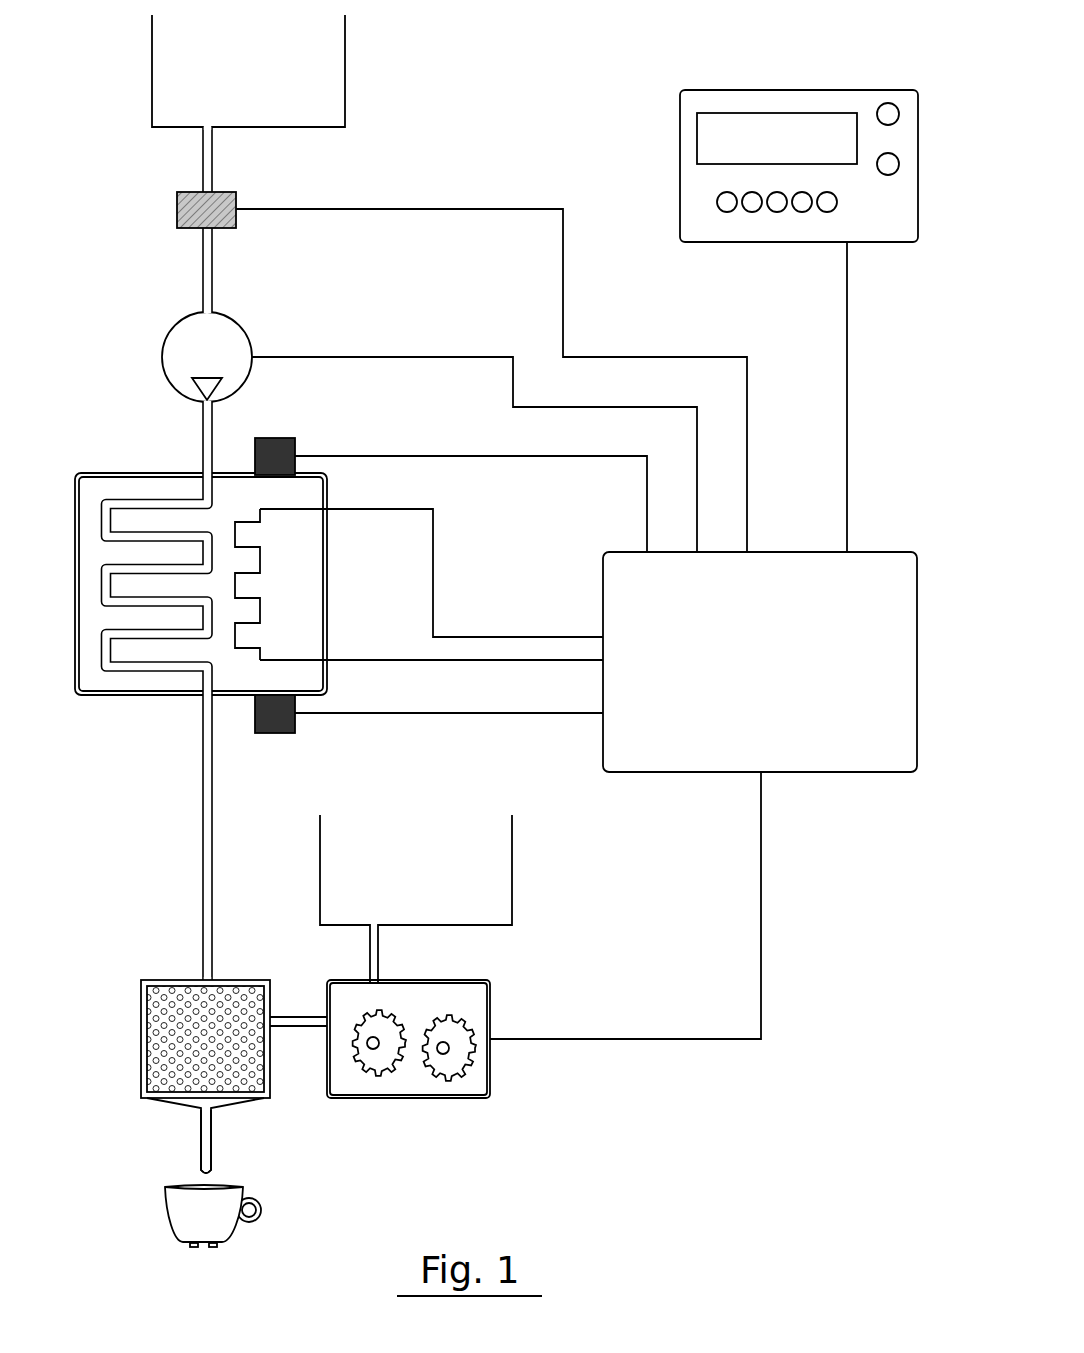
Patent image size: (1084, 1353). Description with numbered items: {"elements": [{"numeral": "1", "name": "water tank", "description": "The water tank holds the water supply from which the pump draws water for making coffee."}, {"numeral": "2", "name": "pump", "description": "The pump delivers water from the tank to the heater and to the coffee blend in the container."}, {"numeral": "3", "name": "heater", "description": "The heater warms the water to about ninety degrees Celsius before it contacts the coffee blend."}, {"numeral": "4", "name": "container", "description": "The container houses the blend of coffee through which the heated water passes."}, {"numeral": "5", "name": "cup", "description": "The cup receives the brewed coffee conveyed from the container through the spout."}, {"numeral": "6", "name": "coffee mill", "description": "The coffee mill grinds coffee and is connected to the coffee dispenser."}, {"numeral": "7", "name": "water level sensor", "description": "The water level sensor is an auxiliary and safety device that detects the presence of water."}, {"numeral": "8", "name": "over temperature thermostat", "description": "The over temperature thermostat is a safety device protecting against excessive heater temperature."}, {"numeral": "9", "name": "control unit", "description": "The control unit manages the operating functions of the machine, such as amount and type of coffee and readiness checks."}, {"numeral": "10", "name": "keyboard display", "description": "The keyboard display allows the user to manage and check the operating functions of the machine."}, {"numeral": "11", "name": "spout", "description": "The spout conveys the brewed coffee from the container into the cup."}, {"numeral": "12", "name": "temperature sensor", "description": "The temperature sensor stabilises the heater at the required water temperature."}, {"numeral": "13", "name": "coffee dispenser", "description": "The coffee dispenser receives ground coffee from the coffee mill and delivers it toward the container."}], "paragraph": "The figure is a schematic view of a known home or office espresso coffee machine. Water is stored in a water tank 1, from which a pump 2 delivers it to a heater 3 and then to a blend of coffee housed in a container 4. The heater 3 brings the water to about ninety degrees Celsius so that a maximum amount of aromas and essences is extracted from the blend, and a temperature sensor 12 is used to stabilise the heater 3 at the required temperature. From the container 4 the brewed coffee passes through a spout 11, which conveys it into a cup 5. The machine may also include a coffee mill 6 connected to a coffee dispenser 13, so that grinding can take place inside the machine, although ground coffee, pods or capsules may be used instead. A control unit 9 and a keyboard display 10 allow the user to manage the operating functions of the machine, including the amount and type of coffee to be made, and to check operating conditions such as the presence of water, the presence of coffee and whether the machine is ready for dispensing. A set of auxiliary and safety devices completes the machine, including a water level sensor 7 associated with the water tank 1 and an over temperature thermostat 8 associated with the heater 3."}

The water tank 1 is at (345, 72).
The pump 2 is at (240, 322).
The heater 3 is at (328, 572).
The coffee brewing chamber 4 is at (141, 1036).
The cup 5 is at (258, 1205).
The coffee mill 6 is at (490, 1070).
The water level sensor 7 is at (178, 196).
The over temperature sensor 8 is at (273, 733).
The control unit 9 is at (857, 772).
The keyboard and display 10 is at (680, 128).
The coffee outlet 11 is at (200, 1142).
The temperature sensor 12 is at (275, 437).
The coffee bean container 13 is at (512, 868).